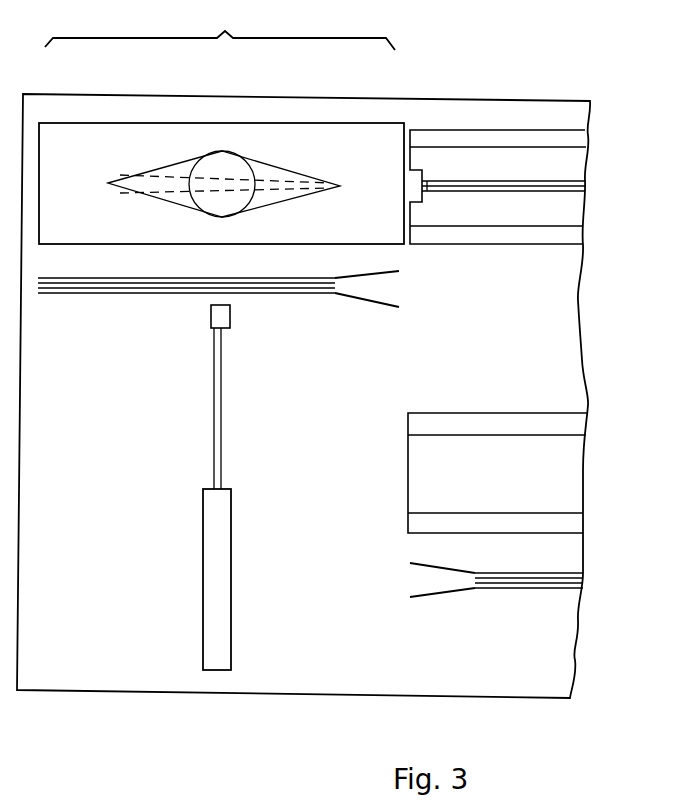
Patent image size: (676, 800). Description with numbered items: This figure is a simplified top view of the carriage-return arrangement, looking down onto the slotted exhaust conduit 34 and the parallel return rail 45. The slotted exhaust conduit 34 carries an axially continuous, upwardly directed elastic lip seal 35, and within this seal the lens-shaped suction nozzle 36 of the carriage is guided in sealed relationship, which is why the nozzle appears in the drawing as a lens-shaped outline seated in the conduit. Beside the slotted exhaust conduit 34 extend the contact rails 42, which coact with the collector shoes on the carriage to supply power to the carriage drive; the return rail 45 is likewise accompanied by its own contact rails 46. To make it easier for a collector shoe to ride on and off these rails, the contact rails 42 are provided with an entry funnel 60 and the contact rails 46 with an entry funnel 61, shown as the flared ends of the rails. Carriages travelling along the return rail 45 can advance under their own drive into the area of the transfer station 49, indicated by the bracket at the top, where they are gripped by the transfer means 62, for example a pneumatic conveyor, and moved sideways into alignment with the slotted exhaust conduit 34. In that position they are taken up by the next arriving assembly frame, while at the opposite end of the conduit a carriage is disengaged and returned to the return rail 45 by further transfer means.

The transfer station 49 is at (220, 27).
The lens-shaped suction nozzle 36 is at (282, 170).
The elastic lip seal 35 is at (570, 164).
The slotted exhaust conduit 34 is at (568, 238).
The contact rails 42 is at (125, 282).
The entry funnel 60 is at (372, 293).
The transfer means 62 is at (222, 527).
The return rail 45 is at (563, 467).
The contact rails 46 is at (550, 576).
The entry funnel 61 is at (435, 574).